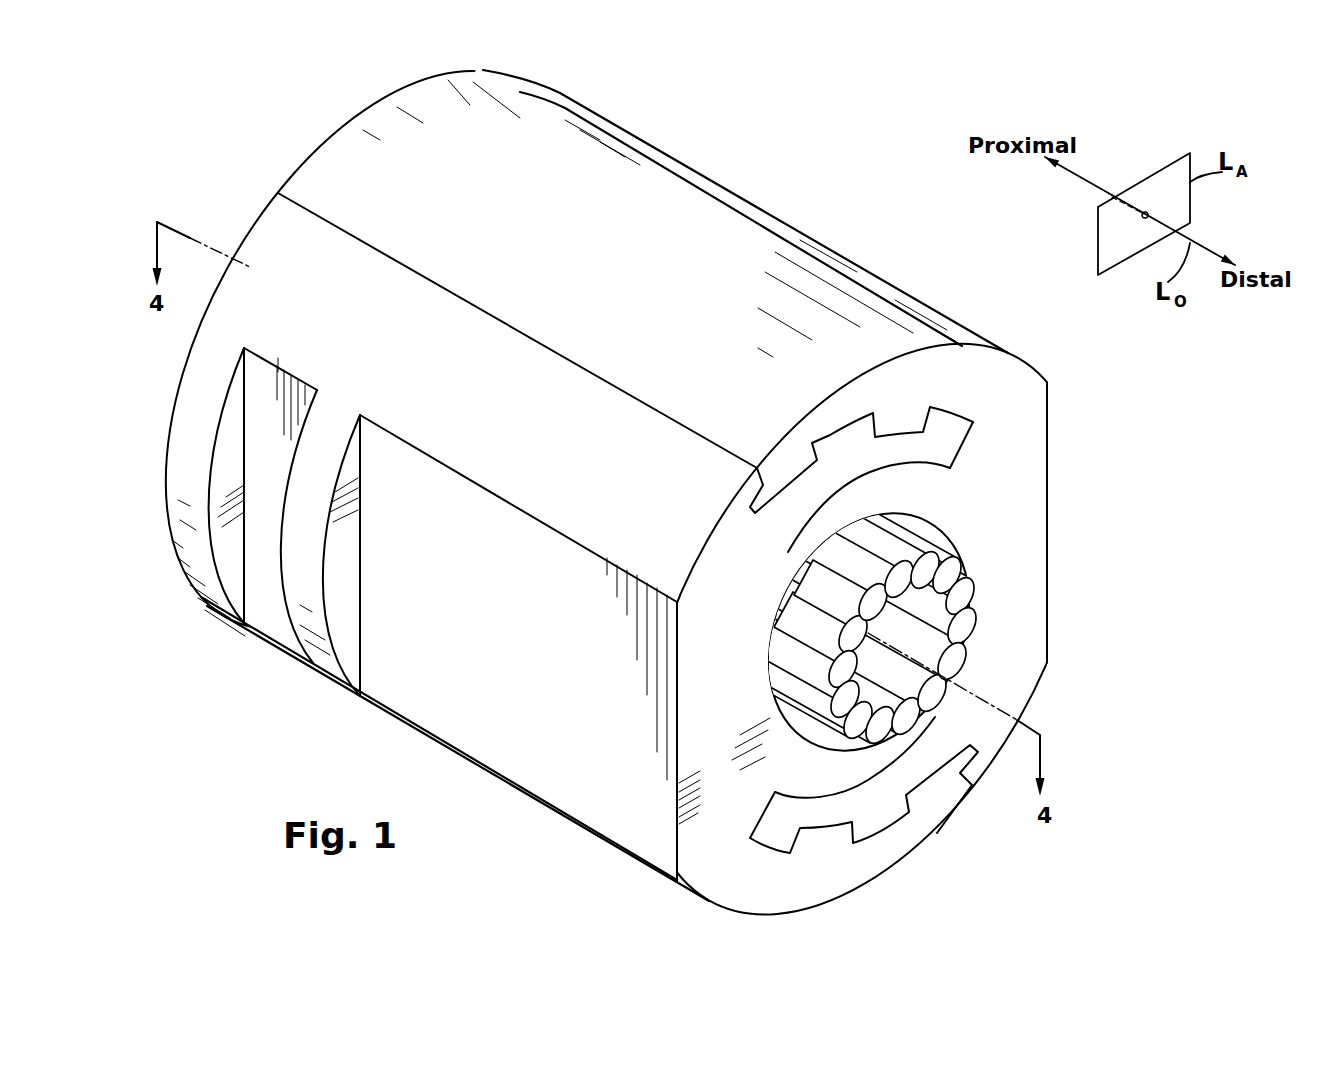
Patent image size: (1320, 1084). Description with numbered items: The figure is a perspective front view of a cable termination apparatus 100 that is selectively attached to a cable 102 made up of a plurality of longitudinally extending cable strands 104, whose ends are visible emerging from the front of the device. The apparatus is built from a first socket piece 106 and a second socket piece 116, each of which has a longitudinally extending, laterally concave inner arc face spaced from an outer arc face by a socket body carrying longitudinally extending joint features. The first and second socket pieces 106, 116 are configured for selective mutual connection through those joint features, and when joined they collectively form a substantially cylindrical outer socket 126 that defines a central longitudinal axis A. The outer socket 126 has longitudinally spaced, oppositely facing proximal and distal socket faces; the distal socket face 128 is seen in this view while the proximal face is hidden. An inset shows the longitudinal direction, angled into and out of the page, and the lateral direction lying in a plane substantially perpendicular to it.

The cable termination apparatus 100 is at (627, 495).
The cable 102 is at (913, 627).
The cable strands 104 is at (954, 662).
The first socket piece 106 is at (944, 296).
The second socket piece 116 is at (569, 838).
The outer socket 126 is at (677, 220).
The distal socket face 128 is at (787, 880).
The central longitudinal axis A is at (975, 695).